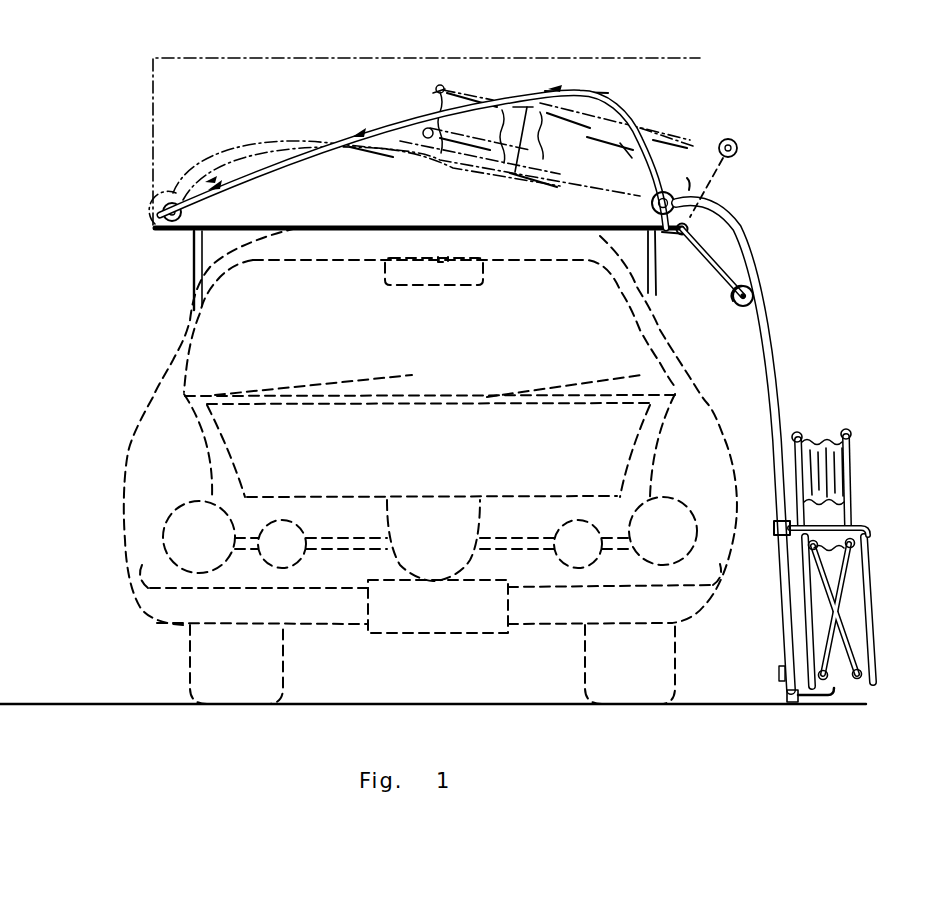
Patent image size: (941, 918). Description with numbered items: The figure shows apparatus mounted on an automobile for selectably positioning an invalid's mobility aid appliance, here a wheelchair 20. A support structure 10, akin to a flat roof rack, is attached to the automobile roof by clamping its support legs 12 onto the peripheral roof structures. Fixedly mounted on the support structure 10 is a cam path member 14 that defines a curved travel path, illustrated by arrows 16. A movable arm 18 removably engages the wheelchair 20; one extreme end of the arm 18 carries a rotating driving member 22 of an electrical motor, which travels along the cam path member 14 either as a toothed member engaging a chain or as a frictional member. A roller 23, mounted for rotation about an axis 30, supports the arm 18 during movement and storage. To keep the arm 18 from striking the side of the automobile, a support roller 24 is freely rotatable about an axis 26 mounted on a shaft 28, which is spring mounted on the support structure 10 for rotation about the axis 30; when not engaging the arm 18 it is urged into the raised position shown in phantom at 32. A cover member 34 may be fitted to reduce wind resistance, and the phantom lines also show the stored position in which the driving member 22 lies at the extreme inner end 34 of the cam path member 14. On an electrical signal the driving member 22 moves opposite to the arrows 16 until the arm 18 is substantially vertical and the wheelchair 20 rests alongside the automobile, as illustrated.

The support structure 10 is at (190, 250).
The support legs 12 is at (656, 273).
The cam path member 14 is at (655, 163).
The arrows 16 is at (403, 120).
The movable arm 18 is at (751, 259).
The wheelchair 20 is at (852, 464).
The driving member 22 is at (655, 207).
The roller 23 is at (689, 229).
The support roller 24 is at (735, 304).
The axis 26 is at (745, 307).
The shaft 28 is at (718, 273).
The axis 30 is at (679, 235).
The raised position 32 is at (738, 146).
The cover member 34 is at (275, 58).